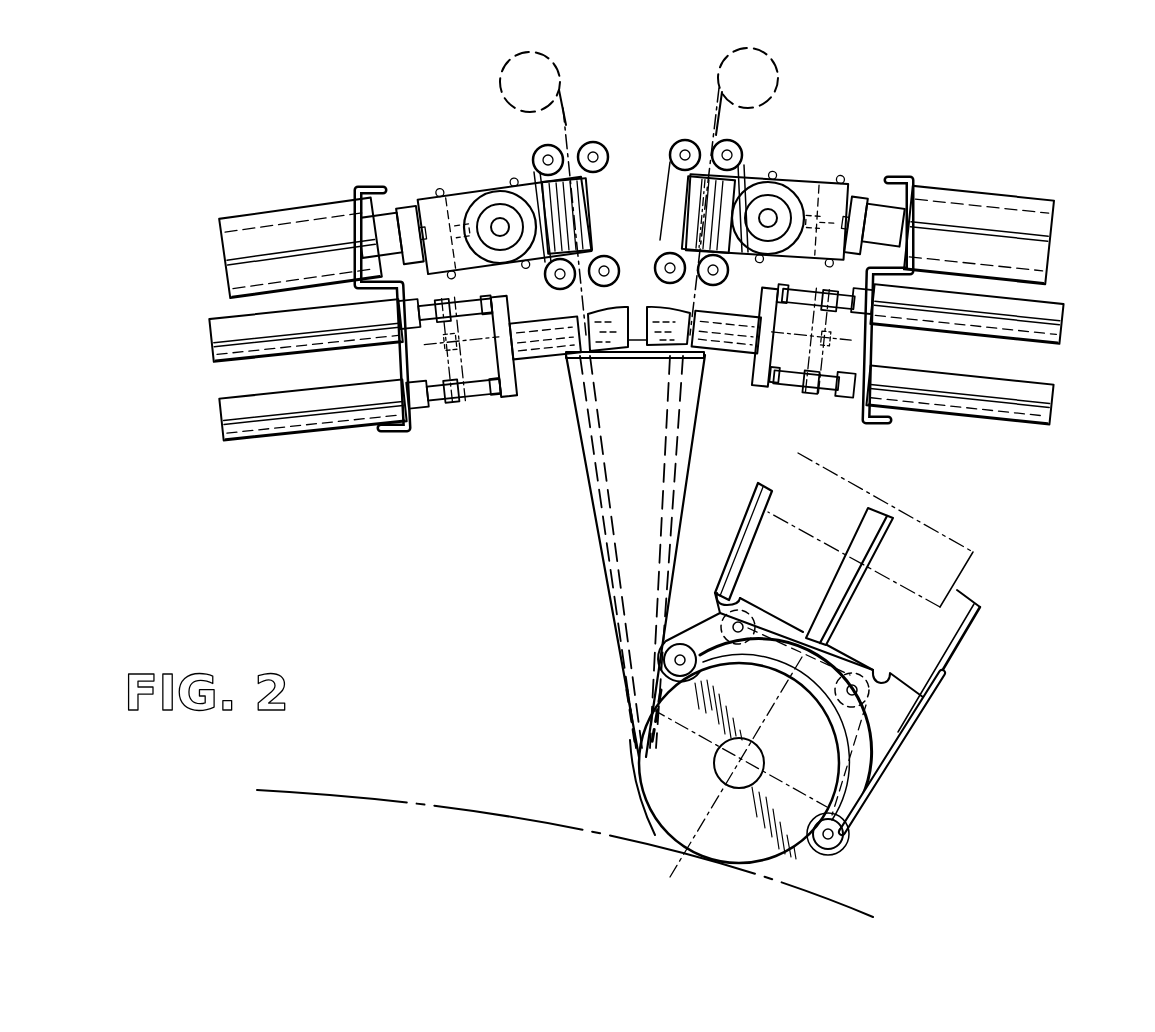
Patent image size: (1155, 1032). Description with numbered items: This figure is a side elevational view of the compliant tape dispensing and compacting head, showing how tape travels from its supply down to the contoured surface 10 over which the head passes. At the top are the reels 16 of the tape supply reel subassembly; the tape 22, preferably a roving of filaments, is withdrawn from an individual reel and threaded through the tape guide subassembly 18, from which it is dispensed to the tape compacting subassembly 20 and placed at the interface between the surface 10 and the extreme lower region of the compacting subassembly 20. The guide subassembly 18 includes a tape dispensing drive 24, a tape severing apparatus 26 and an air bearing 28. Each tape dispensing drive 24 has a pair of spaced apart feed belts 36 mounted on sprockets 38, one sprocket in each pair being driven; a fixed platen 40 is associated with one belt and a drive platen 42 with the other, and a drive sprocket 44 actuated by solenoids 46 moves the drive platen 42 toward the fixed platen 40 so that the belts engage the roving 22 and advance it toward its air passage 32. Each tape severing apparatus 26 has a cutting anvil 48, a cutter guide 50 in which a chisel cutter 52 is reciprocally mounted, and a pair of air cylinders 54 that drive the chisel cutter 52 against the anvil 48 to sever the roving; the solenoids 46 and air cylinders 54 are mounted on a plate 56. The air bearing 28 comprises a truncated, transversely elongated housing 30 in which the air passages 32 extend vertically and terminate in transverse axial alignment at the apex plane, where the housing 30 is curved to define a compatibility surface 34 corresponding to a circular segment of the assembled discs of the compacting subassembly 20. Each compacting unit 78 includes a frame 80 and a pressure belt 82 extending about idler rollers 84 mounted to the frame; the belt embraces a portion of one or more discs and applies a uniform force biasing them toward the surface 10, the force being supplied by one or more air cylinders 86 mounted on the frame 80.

The contoured surface 10 is at (356, 800).
The reels 16 is at (502, 78).
The tape guide subassembly 18 is at (540, 417).
The tape compacting subassembly 20 is at (852, 667).
The tape 22 is at (572, 118).
The tape dispensing drive 24 is at (660, 175).
The tape severing apparatus 26 is at (553, 305).
The air bearing 28 is at (635, 556).
The housing 30 is at (594, 505).
The air passages 32 is at (672, 490).
The compatibility surface 34 is at (636, 777).
The feed belts 36 is at (540, 175).
The sprockets 38 is at (684, 150).
The fixed platen 40 is at (690, 232).
The drive platen 42 is at (735, 240).
The drive sprocket 44 is at (770, 200).
The solenoids 46 is at (1000, 192).
The cutting anvil 48 is at (600, 338).
The cutter guide 50 is at (728, 352).
The chisel cutter 52 is at (705, 357).
The air cylinders 54 is at (990, 425).
The plate 56 is at (354, 190).
The compacting units 78 is at (934, 726).
The frame 80 is at (962, 638).
The pressure belt 82 is at (857, 770).
The idler rollers 84 is at (870, 712).
The air cylinders 86 is at (890, 512).